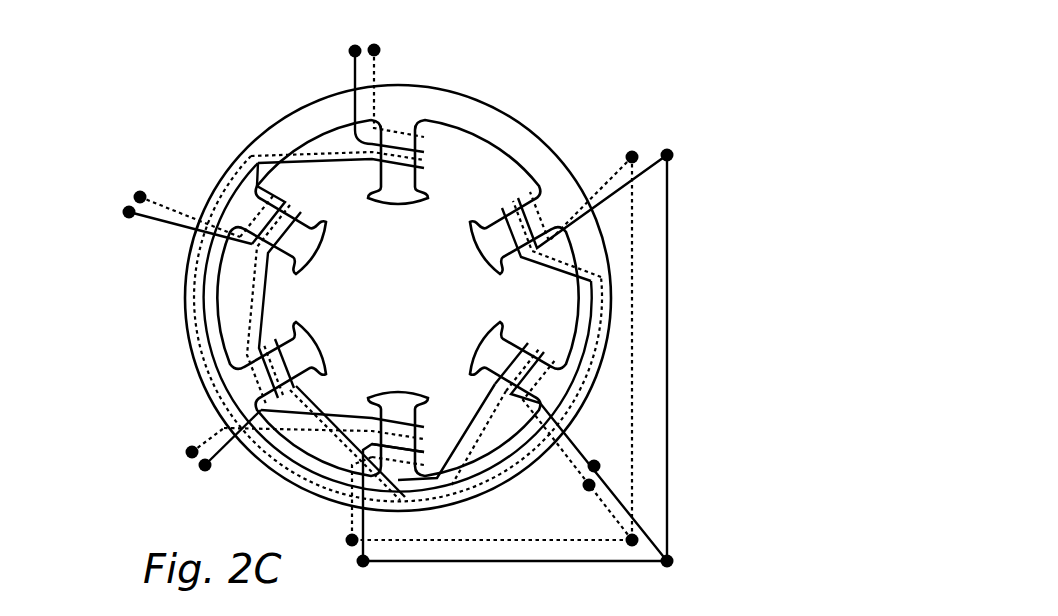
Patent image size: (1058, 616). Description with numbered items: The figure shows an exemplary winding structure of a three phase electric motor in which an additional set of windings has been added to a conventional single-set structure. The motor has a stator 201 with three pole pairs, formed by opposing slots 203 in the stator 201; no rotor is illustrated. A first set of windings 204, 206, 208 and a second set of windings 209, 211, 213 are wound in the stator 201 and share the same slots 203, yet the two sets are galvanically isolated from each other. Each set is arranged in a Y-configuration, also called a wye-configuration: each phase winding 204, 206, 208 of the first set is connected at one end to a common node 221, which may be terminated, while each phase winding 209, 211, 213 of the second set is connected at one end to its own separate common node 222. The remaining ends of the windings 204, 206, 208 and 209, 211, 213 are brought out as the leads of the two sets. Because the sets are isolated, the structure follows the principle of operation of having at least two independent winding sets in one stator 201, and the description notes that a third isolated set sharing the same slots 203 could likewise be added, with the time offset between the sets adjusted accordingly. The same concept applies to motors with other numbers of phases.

The stator 201 is at (585, 112).
The slots 203 is at (495, 350).
The phase winding 204 is at (349, 52).
The phase winding 206 is at (126, 217).
The phase winding 208 is at (205, 471).
The phase winding 209 is at (379, 51).
The phase winding 211 is at (137, 195).
The phase winding 213 is at (188, 452).
The common node 221 is at (672, 563).
The common node 222 is at (634, 528).